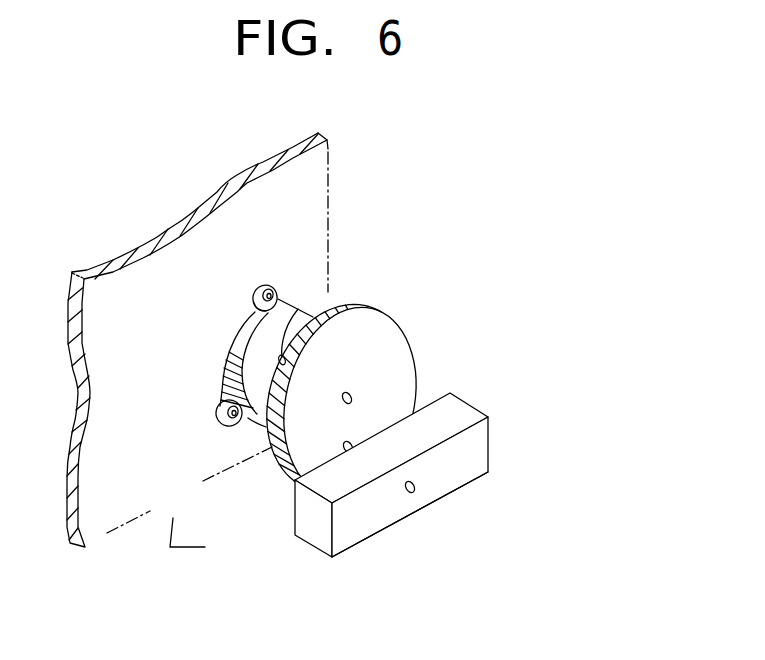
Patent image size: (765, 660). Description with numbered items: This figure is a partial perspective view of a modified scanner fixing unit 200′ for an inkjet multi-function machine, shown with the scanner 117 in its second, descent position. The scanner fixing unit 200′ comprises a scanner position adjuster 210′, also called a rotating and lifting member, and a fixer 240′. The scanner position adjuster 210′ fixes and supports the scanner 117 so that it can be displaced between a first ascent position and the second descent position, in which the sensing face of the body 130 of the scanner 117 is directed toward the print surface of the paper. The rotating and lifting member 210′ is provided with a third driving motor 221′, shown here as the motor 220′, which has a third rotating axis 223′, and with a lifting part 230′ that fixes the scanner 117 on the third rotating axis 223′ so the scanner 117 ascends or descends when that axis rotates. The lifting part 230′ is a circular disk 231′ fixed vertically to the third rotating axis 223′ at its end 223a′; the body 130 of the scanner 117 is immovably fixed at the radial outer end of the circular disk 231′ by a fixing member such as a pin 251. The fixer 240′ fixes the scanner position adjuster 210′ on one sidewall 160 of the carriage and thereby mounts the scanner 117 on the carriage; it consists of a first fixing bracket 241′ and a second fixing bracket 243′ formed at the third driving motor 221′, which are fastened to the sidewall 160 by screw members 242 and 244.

The sidewall 160 is at (100, 528).
The scanner fixing unit 200′ is at (507, 212).
The scanner position adjuster 210′ is at (170, 544).
The motor 220′ is at (211, 370).
The third driving motor 221′ is at (211, 343).
The third rotating axis 223′ is at (298, 309).
The end of the third rotating axis 223a′ is at (352, 392).
The lifting part 230′ is at (358, 402).
The circular disk 231′ is at (398, 333).
The fixer 240′ is at (189, 346).
The first fixing bracket 241′ is at (220, 396).
The screw member 242 is at (222, 365).
The second fixing bracket 243′ is at (220, 272).
The screw member 244 is at (262, 292).
The body 130 is at (420, 498).
The scanner 117 is at (389, 533).
The pin 251 is at (413, 492).